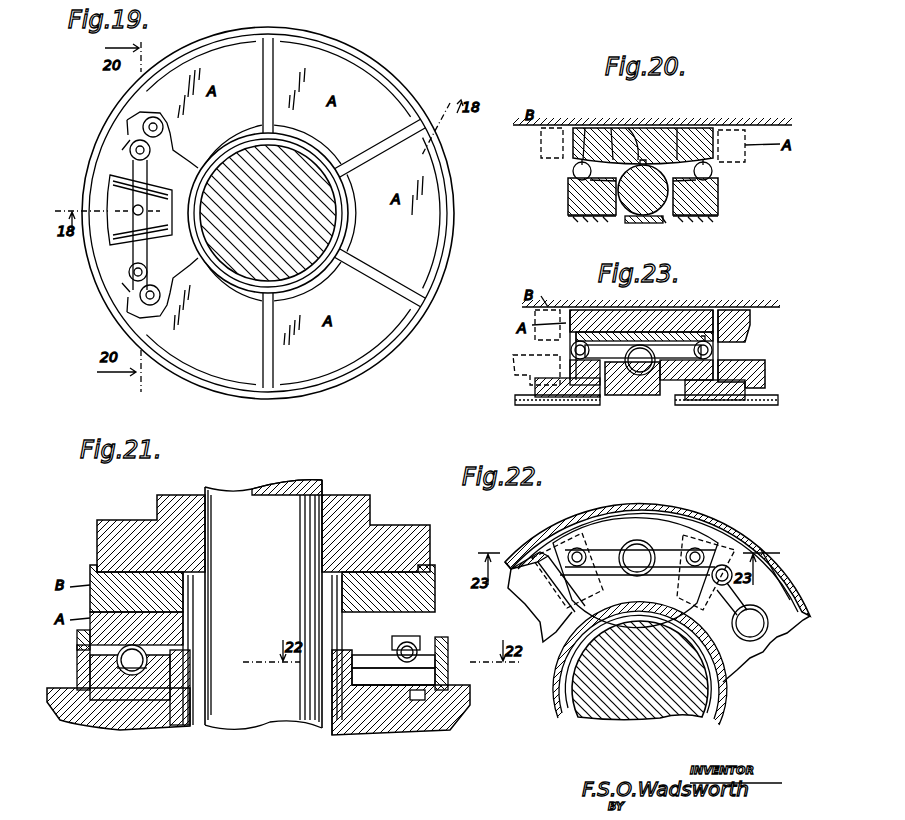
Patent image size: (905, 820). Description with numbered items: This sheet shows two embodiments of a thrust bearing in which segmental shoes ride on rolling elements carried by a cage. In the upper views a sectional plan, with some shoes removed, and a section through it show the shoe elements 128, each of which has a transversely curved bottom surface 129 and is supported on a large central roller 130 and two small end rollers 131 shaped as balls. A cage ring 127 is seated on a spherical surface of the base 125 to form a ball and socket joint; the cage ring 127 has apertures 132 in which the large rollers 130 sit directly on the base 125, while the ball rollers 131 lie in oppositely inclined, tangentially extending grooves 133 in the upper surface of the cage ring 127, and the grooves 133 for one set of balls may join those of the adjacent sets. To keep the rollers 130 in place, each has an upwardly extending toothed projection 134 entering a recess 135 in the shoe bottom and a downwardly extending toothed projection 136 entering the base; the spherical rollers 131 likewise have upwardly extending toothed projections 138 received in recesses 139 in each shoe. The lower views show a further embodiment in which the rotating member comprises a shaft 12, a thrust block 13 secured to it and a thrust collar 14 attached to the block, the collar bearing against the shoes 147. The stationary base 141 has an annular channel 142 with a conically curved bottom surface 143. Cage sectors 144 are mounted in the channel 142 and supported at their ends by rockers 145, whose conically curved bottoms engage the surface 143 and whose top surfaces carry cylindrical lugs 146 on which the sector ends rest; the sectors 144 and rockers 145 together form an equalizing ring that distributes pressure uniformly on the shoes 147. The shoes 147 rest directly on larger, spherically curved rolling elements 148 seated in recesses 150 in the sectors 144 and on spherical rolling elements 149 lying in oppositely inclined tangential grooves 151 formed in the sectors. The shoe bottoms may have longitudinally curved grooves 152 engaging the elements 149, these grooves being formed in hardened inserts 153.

In FIG. 19, the shaft 12 is at (268, 213).
In FIG. 21, the shaft 12 is at (323, 496).
In FIG. 22, the shaft 12 is at (598, 692).
In FIG. 21, the thrust block 13 is at (360, 517).
In FIG. 21, the thrust collar 14 is at (432, 588).
In FIG. 20, the base 125 is at (655, 222).
In FIG. 20, the cage ring 127 is at (585, 211).
In FIG. 19, the shoe elements 128 is at (380, 104).
In FIG. 20, the shoe elements 128 is at (700, 132).
In FIG. 20, the bottom surfaces 129 is at (672, 150).
In FIG. 19, the large central roller 130 is at (116, 232).
In FIG. 20, the large central roller 130 is at (628, 212).
In FIG. 19, the small end rollers 131 is at (140, 292).
In FIG. 20, the small end rollers 131 is at (713, 171).
In FIG. 20, the apertures 132 is at (706, 211).
In FIG. 19, the inclined grooves 133 is at (134, 172).
In FIG. 20, the inclined grooves 133 is at (716, 193).
In FIG. 19, the upwardly extending toothed projection 134 is at (133, 208).
In FIG. 20, the upwardly extending toothed projection 134 is at (612, 140).
In FIG. 20, the recess 135 is at (640, 150).
In FIG. 20, the downwardly extending toothed projection 136 is at (644, 224).
In FIG. 20, the upwardly extending toothed projections 138 is at (574, 135).
In FIG. 20, the recesses 139 is at (714, 138).
In FIG. 21, the stationary base 141 is at (386, 727).
In FIG. 21, the annular channel 142 is at (348, 736).
In FIG. 21, the conically curved bottom surface 143 is at (366, 736).
In FIG. 23, the cage sectors 144 is at (680, 395).
In FIG. 21, the cage sectors 144 is at (440, 677).
In FIG. 23, the rockers 145 is at (555, 398).
In FIG. 21, the rockers 145 is at (426, 700).
In FIG. 22, the rockers 145 is at (760, 542).
In FIG. 23, the cylindrical lugs 146 is at (745, 405).
In FIG. 23, the bearing shoes 147 is at (690, 312).
In FIG. 21, the bearing shoes 147 is at (449, 633).
In FIG. 22, the bearing shoes 147 is at (775, 568).
In FIG. 23, the rolling elements 148 is at (638, 380).
In FIG. 21, the rolling elements 148 is at (112, 700).
In FIG. 22, the rolling elements 148 is at (645, 545).
In FIG. 23, the rolling elements 149 is at (712, 350).
In FIG. 21, the rolling elements 149 is at (400, 645).
In FIG. 22, the rolling elements 149 is at (704, 550).
In FIG. 23, the recesses 150 is at (641, 376).
In FIG. 21, the recesses 150 is at (138, 676).
In FIG. 22, the recesses 150 is at (766, 618).
In FIG. 23, the inclined grooves 151 is at (700, 380).
In FIG. 21, the inclined grooves 151 is at (352, 662).
In FIG. 22, the inclined grooves 151 is at (606, 548).
In FIG. 23, the longitudinally curved grooves 152 is at (608, 322).
In FIG. 23, the hardened inserts 153 is at (655, 332).
In FIG. 21, the hardened inserts 153 is at (440, 620).
In FIG. 22, the hardened inserts 153 is at (575, 612).